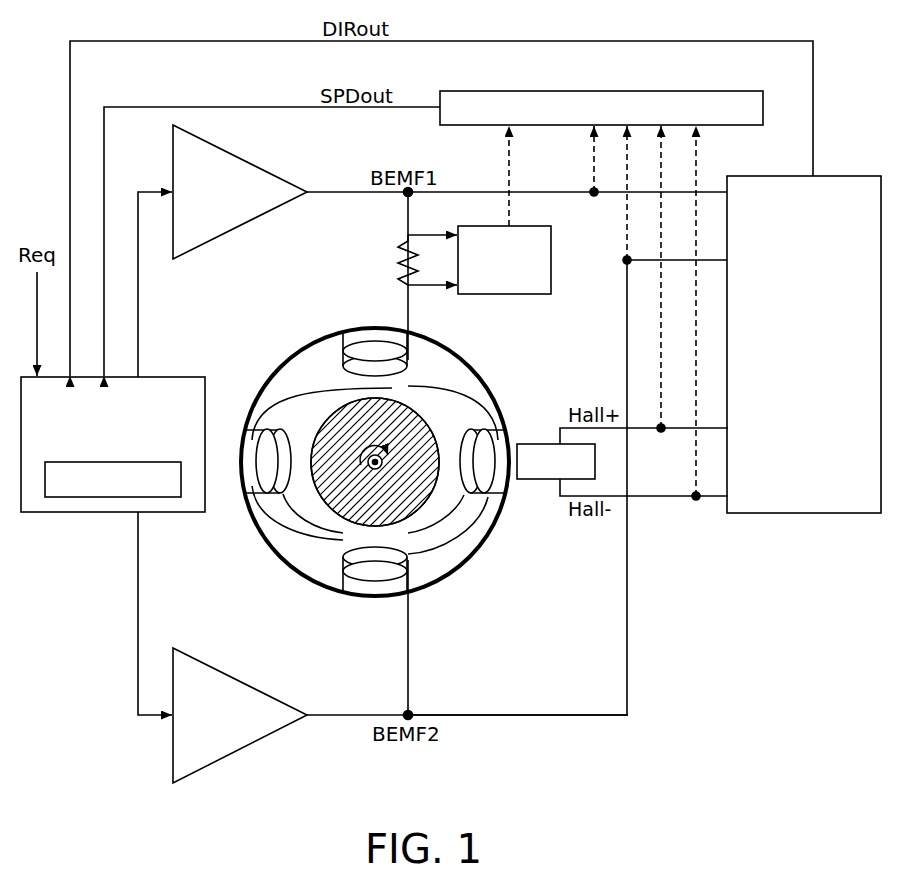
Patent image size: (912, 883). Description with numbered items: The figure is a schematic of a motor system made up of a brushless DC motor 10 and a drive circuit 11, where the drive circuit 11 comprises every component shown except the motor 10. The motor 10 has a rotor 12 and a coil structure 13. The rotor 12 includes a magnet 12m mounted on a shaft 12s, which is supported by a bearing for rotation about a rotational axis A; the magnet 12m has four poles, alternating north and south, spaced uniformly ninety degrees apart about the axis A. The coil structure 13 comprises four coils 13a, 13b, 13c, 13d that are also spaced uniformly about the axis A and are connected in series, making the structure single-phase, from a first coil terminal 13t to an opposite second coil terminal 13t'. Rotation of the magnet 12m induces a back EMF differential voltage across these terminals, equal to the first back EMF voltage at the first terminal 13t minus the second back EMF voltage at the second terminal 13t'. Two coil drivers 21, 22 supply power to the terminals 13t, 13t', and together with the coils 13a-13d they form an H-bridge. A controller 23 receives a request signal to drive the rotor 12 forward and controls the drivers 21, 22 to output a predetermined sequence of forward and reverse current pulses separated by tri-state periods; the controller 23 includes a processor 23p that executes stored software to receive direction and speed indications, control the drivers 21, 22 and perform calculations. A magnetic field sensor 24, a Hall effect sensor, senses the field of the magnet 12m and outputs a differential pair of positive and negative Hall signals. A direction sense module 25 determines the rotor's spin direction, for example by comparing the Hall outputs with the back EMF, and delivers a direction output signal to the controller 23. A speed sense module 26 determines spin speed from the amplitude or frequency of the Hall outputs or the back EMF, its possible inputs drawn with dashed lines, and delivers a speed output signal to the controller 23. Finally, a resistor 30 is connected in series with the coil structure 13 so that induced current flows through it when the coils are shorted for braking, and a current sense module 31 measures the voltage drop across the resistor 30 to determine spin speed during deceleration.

The motor 10 is at (375, 468).
The drive circuit 11 is at (543, 734).
The rotor 12 is at (375, 472).
The magnet 12m is at (398, 483).
The shaft 12s is at (386, 470).
The rotational axis A is at (378, 468).
The coil structure 13 is at (419, 356).
The coil 13a is at (350, 345).
The coil 13b is at (257, 497).
The coil 13c is at (488, 492).
The coil 13d is at (368, 582).
The first coil terminal 13t is at (378, 209).
The second coil terminal 13t' is at (434, 698).
The coil driver 21 is at (240, 192).
The coil driver 22 is at (240, 715).
The controller 23 is at (112, 467).
The processor 23p is at (47, 498).
The magnetic field sensor 24 is at (541, 443).
The direction sense module 25 is at (804, 344).
The speed sense module 26 is at (601, 108).
The resistor 30 is at (400, 259).
The current sense module 31 is at (551, 260).